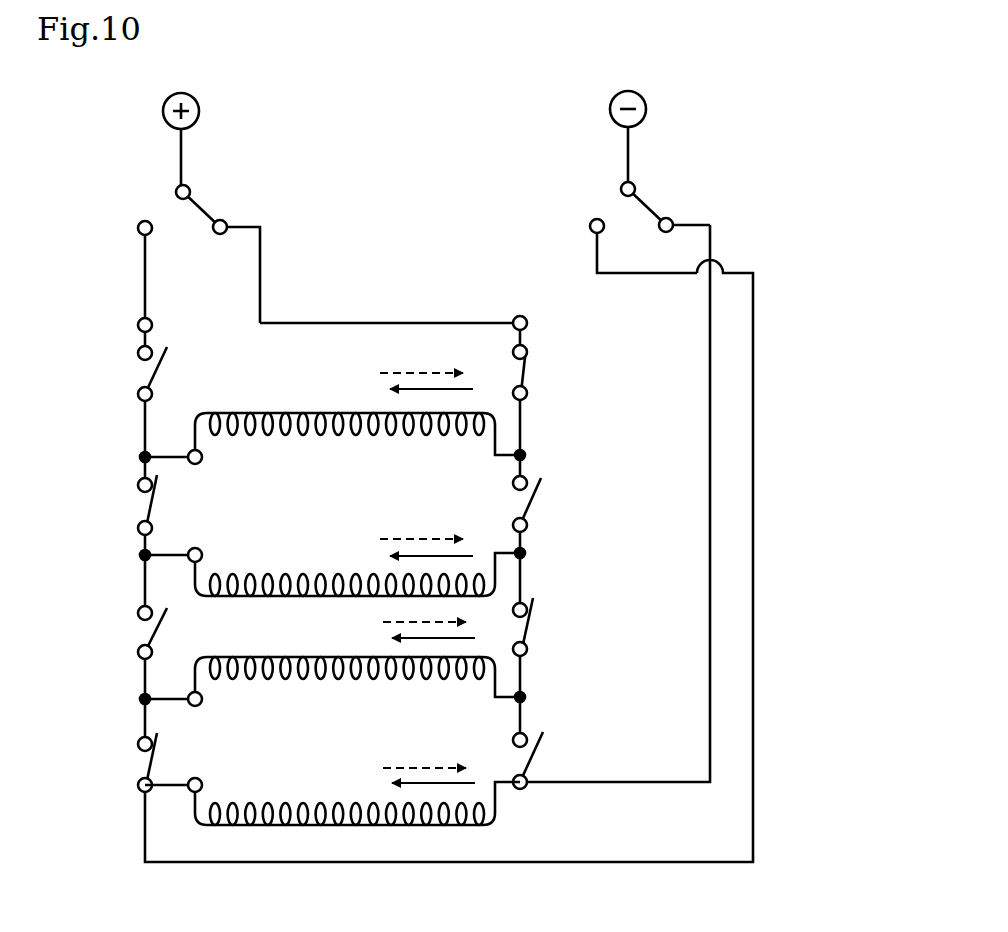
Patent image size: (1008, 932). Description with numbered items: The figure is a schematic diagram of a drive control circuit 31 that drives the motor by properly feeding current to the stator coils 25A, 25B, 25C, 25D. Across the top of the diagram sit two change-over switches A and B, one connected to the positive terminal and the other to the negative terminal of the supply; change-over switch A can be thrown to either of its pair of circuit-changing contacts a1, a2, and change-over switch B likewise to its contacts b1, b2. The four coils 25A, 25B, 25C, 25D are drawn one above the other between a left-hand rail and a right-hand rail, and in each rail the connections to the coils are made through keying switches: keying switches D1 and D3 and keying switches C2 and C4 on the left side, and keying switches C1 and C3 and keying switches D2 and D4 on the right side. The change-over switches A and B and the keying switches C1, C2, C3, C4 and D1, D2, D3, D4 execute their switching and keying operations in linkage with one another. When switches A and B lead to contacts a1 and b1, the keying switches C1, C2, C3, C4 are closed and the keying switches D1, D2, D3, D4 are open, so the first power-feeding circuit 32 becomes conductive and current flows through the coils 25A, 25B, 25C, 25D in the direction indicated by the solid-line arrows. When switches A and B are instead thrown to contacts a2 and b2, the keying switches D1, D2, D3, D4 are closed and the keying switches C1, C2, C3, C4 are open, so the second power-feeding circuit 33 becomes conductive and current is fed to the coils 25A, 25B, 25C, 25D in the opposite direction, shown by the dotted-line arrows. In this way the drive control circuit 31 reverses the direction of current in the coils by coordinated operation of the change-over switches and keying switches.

The coil 25A is at (273, 410).
The coil 25B is at (273, 577).
The coil 25C is at (263, 657).
The coil 25D is at (270, 808).
The drive control circuit 31 is at (366, 318).
The first power-feeding circuit 32 is at (713, 423).
The second power-feeding circuit 33 is at (755, 517).
The change-over switch A is at (200, 198).
The change-over switch B is at (643, 195).
The circuit-changing contact a1 is at (242, 260).
The circuit-changing contact a2 is at (125, 261).
The circuit-changing contact b1 is at (693, 212).
The circuit-changing contact b2 is at (627, 232).
The keying switch C1 is at (525, 375).
The keying switch C2 is at (143, 508).
The keying switch C3 is at (528, 628).
The keying switch C4 is at (145, 760).
The keying switch D1 is at (138, 374).
The keying switch D2 is at (528, 505).
The keying switch D3 is at (143, 631).
The keying switch D4 is at (532, 755).